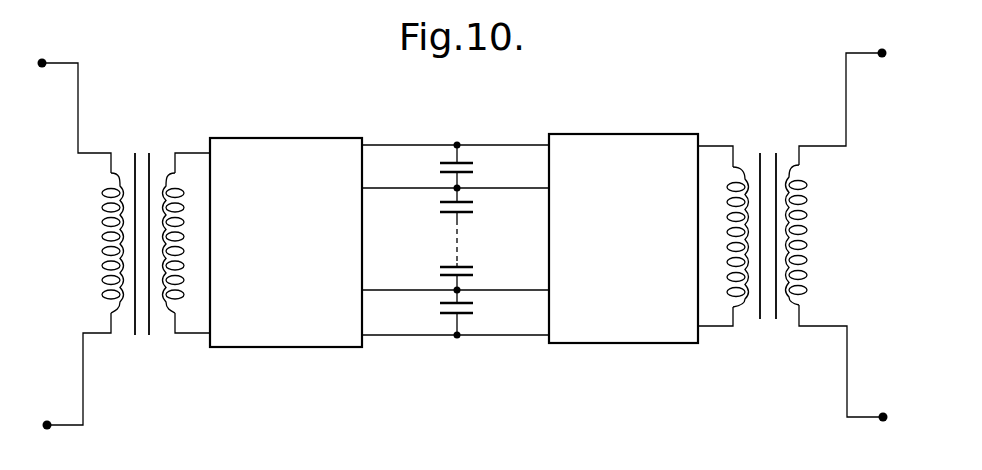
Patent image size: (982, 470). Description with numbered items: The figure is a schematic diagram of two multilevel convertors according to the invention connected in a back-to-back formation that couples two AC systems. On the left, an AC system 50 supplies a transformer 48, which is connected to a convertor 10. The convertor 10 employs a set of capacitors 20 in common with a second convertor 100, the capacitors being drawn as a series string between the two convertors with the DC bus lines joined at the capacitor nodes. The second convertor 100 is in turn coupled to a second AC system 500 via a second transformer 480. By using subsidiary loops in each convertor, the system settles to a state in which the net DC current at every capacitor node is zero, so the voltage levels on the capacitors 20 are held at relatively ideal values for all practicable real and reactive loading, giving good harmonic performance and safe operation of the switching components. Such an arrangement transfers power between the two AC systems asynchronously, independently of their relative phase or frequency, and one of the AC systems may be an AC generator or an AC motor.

The convertor 10 is at (319, 150).
The set of capacitors 20 is at (464, 132).
The transformer 48 is at (155, 136).
The AC system 50 is at (74, 244).
The second convertor 100 is at (587, 145).
The second transformer 480 is at (766, 134).
The second AC system 500 is at (843, 235).